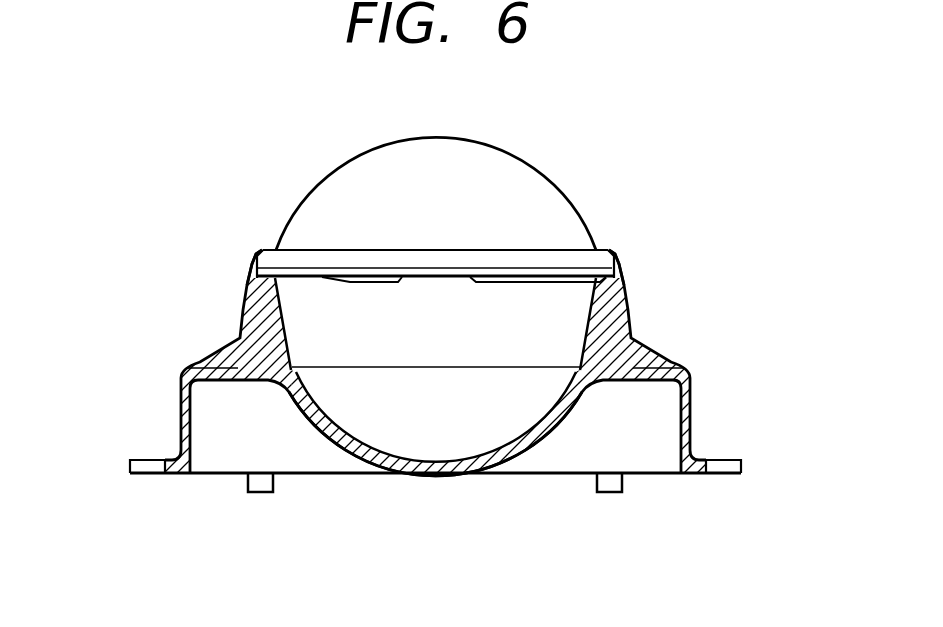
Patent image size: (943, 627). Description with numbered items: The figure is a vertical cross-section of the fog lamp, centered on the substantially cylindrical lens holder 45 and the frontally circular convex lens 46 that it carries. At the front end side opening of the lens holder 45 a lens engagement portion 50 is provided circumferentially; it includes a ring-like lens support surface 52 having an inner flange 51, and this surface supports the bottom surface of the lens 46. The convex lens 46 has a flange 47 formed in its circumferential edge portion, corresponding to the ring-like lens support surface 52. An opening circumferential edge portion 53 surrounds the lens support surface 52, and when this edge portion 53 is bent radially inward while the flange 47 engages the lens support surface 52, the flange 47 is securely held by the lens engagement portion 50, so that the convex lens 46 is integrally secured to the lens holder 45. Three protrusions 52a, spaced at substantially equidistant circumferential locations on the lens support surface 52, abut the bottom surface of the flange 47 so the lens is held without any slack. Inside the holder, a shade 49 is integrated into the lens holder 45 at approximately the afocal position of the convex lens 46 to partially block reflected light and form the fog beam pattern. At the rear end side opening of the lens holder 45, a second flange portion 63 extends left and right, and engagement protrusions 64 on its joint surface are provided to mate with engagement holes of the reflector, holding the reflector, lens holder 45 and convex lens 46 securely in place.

The lens holder 45 is at (668, 327).
The convex lens 46 is at (503, 147).
The flange 47 is at (535, 257).
The shade 49 is at (447, 480).
The lens engagement portion 50 is at (288, 252).
The inner flange 51 is at (472, 216).
The ring-like lens support surface 52 is at (563, 270).
The protrusions 52a is at (424, 270).
The opening circumferential edge portion 53 is at (257, 258).
The second flange portion 63 is at (128, 463).
The engagement protrusions 64 is at (259, 492).